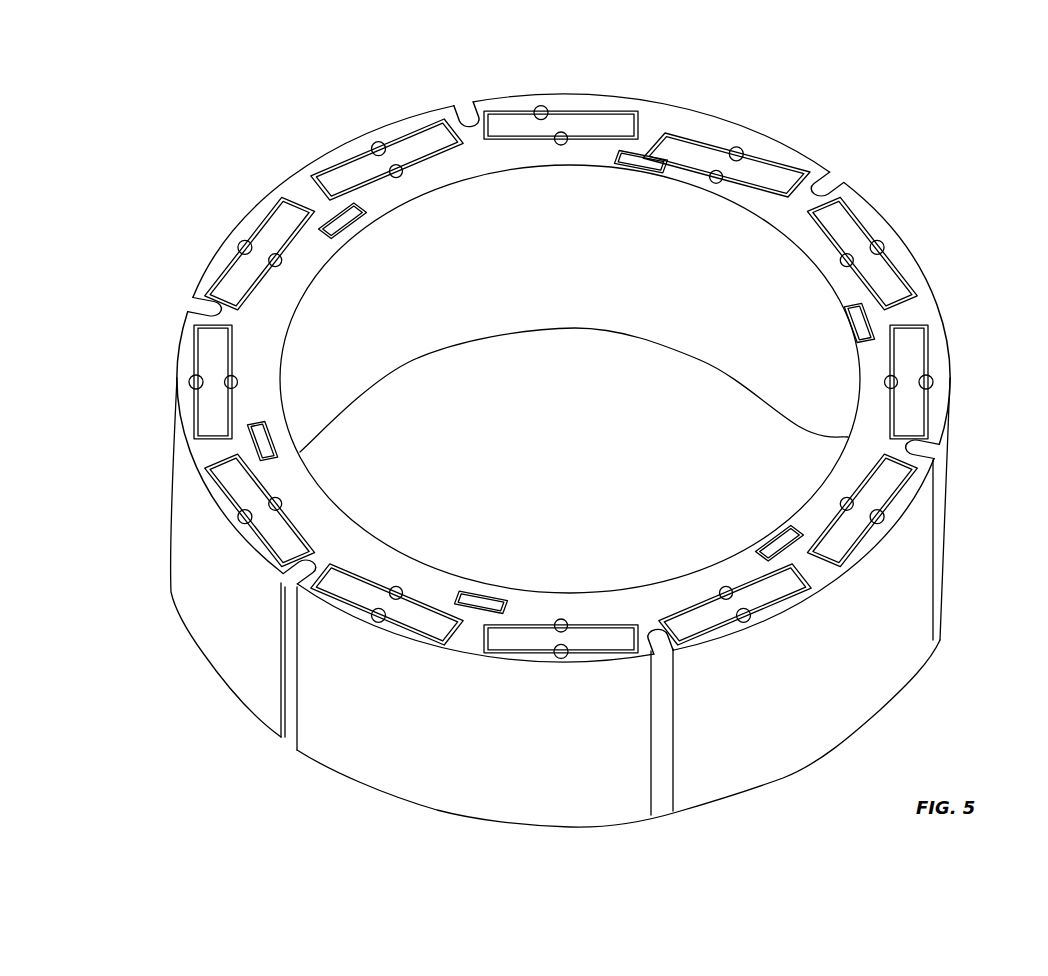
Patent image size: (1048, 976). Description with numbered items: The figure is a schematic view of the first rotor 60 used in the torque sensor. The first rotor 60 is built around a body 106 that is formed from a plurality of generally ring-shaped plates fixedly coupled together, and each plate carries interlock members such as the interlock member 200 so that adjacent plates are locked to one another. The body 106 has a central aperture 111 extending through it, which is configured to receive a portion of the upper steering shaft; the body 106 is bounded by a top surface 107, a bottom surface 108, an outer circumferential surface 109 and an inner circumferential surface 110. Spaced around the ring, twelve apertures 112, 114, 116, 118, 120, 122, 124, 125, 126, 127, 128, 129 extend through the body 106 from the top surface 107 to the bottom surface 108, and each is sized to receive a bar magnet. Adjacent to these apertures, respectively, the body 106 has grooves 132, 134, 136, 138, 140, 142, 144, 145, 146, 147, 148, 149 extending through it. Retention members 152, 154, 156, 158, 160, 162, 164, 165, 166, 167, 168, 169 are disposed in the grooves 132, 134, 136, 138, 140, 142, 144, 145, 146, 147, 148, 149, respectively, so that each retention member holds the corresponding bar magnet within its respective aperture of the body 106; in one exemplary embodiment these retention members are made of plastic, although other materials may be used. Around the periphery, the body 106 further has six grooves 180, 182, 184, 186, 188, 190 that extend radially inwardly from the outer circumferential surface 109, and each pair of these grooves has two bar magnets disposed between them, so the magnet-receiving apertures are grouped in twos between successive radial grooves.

The first rotor 60 is at (881, 125).
The body 106 is at (568, 92).
The top surface 107 is at (780, 152).
The bottom surface 108 is at (783, 777).
The outer circumferential surface 109 is at (800, 715).
The inner circumferential surface 110 is at (500, 320).
The central aperture 111 is at (630, 177).
The aperture 112 is at (547, 110).
The aperture 114 is at (740, 152).
The aperture 116 is at (884, 250).
The aperture 118 is at (926, 380).
The aperture 120 is at (882, 515).
The aperture 122 is at (743, 618).
The aperture 124 is at (566, 655).
The aperture 125 is at (379, 618).
The aperture 126 is at (242, 515).
The aperture 127 is at (200, 381).
The aperture 128 is at (243, 252).
The aperture 129 is at (382, 150).
The groove 132 is at (558, 146).
The groove 134 is at (716, 180).
The groove 136 is at (841, 260).
The groove 138 is at (885, 378).
The groove 140 is at (843, 500).
The groove 142 is at (727, 588).
The groove 144 is at (563, 620).
The groove 145 is at (397, 588).
The groove 146 is at (281, 501).
The groove 147 is at (240, 379).
The groove 148 is at (281, 262).
The groove 149 is at (401, 176).
The retention member 152 is at (564, 144).
The retention member 154 is at (720, 183).
The retention member 156 is at (843, 265).
The retention member 158 is at (885, 383).
The retention member 160 is at (843, 506).
The retention member 162 is at (724, 588).
The retention member 164 is at (559, 622).
The retention member 165 is at (399, 590).
The retention member 166 is at (280, 498).
The retention member 167 is at (240, 385).
The retention member 168 is at (281, 266).
The retention member 169 is at (398, 177).
The groove 180 is at (462, 106).
The groove 182 is at (840, 181).
The groove 184 is at (938, 453).
The groove 186 is at (668, 656).
The groove 188 is at (286, 577).
The groove 190 is at (183, 300).
The interlock member 200 is at (350, 222).